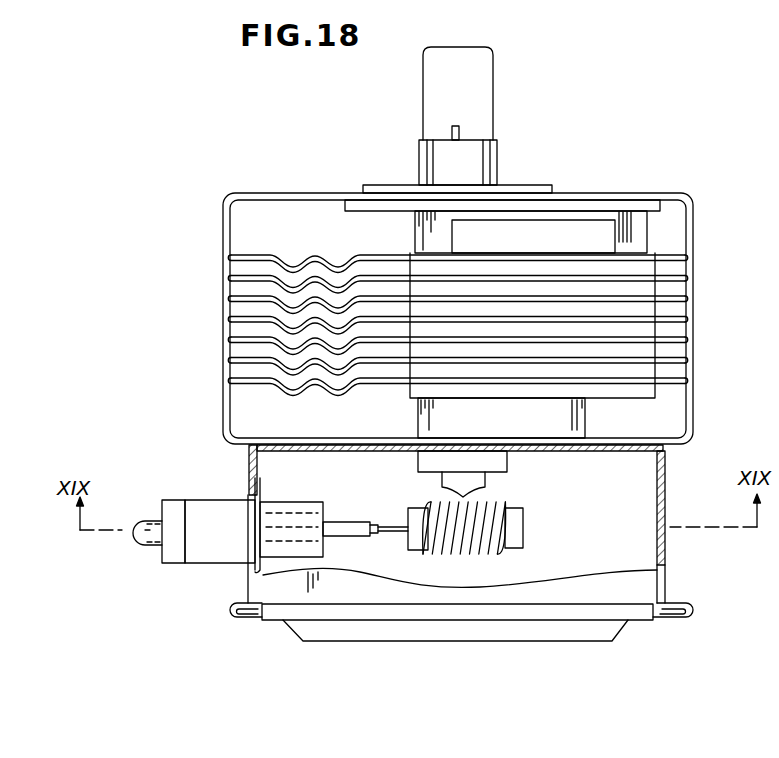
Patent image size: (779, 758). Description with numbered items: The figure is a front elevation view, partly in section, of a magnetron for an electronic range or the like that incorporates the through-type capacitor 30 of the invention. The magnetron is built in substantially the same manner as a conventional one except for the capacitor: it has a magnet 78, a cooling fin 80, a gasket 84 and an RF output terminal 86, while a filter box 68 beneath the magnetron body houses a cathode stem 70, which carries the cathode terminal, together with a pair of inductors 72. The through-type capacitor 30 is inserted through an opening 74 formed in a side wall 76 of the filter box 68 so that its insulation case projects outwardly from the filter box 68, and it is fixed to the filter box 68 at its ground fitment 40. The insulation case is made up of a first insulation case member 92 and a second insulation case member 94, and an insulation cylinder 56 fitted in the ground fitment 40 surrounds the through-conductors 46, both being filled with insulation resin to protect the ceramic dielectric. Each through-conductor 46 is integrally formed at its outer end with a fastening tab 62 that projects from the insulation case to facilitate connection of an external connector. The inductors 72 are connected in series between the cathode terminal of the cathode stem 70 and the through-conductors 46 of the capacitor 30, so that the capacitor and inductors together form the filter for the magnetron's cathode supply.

The through-type capacitor 30 is at (168, 578).
The ground fitment 40 is at (263, 562).
The through-conductors 46 is at (355, 540).
The insulation cylinder 56 is at (292, 512).
The fastening tab 62 is at (150, 535).
The filter box 68 is at (666, 540).
The cathode stem 70 is at (495, 462).
The inductors 72 is at (520, 546).
The opening 74 is at (242, 554).
The side wall 76 is at (250, 470).
The magnet 78 is at (630, 420).
The cooling fin 80 is at (680, 268).
The gasket 84 is at (528, 186).
The RF output terminal 86 is at (482, 72).
The first insulation case member 92 is at (203, 510).
The second insulation case member 94 is at (175, 505).